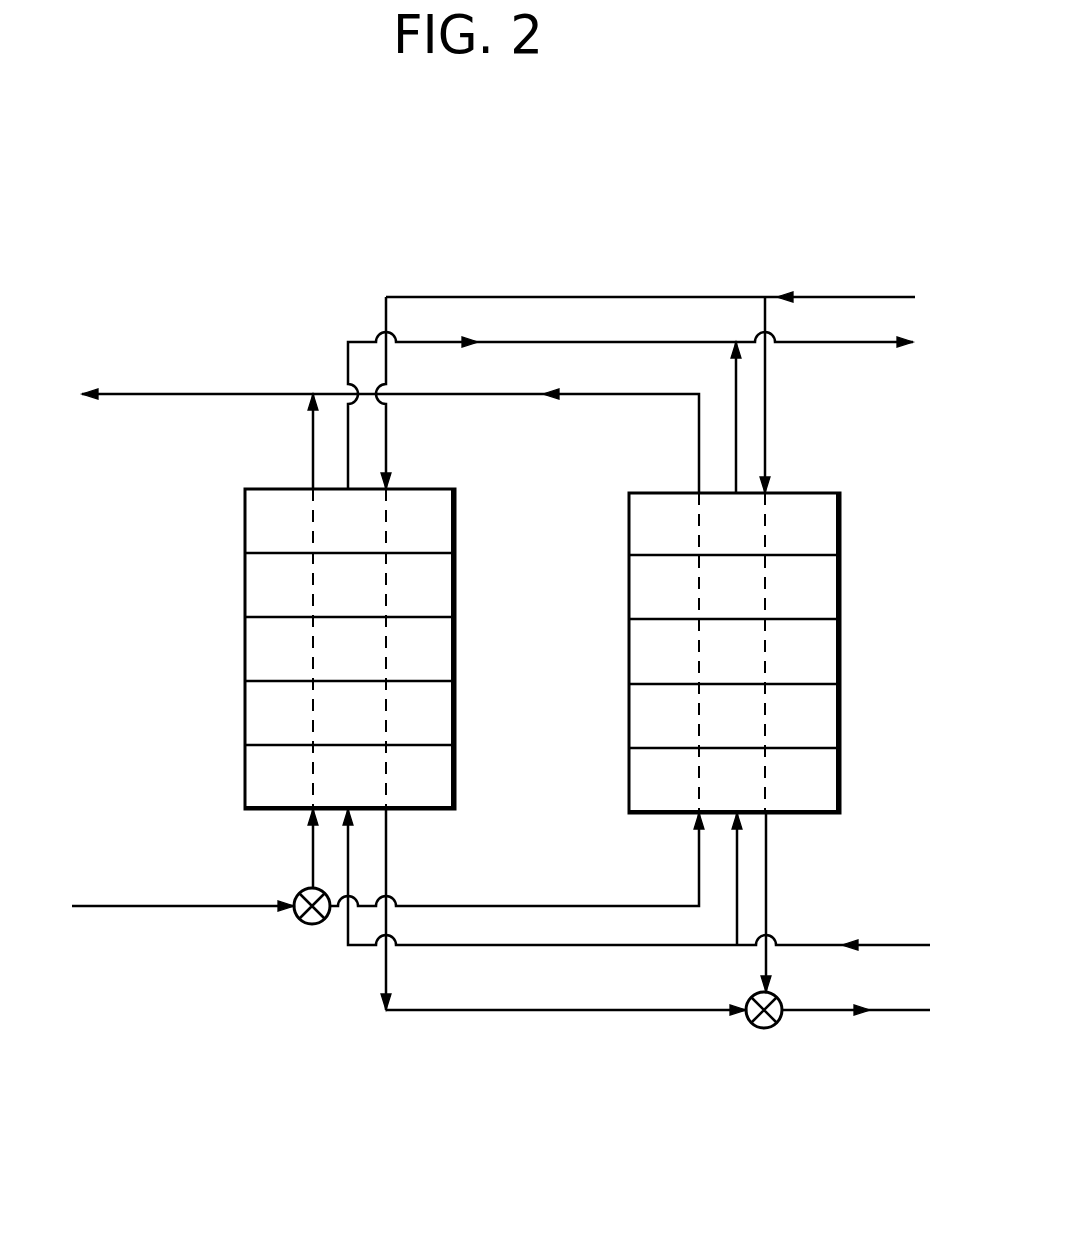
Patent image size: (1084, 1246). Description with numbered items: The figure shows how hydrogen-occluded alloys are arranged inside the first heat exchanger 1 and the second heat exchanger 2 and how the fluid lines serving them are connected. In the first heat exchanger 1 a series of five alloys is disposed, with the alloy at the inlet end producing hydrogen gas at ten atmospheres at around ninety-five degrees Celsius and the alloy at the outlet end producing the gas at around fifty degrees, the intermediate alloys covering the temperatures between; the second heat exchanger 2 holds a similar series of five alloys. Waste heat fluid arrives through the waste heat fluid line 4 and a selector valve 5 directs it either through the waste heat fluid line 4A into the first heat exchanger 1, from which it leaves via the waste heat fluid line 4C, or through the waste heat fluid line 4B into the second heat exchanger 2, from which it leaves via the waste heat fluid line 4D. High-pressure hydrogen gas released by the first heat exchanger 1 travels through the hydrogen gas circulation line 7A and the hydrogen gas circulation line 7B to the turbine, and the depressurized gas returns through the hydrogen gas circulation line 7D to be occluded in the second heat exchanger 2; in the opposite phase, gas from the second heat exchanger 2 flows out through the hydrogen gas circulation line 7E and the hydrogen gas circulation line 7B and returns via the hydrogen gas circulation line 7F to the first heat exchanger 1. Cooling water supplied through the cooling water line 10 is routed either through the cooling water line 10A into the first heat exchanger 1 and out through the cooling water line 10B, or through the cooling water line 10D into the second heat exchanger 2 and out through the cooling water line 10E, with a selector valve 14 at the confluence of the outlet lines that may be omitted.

The first heat exchanger 1 is at (456, 708).
The second heat exchanger 2 is at (841, 660).
The waste heat fluid line 4 is at (180, 396).
The waste heat fluid line 4A is at (312, 873).
The waste heat fluid line 4B is at (582, 904).
The waste heat fluid line 4C is at (312, 454).
The waste heat fluid line 4D is at (597, 400).
The selector valve 5 is at (300, 925).
The hydrogen gas circulation line 7A is at (607, 340).
The hydrogen gas circulation line 7B is at (866, 345).
The hydrogen gas circulation line 7D is at (628, 948).
The hydrogen gas circulation line 7E is at (735, 462).
The hydrogen gas circulation line 7F is at (736, 927).
The cooling water line 10 is at (857, 295).
The cooling water line 10A is at (385, 313).
The cooling water line 10B is at (386, 983).
The cooling water line 10D is at (767, 428).
The cooling water line 10E is at (768, 908).
The selector valve 14 is at (766, 1032).